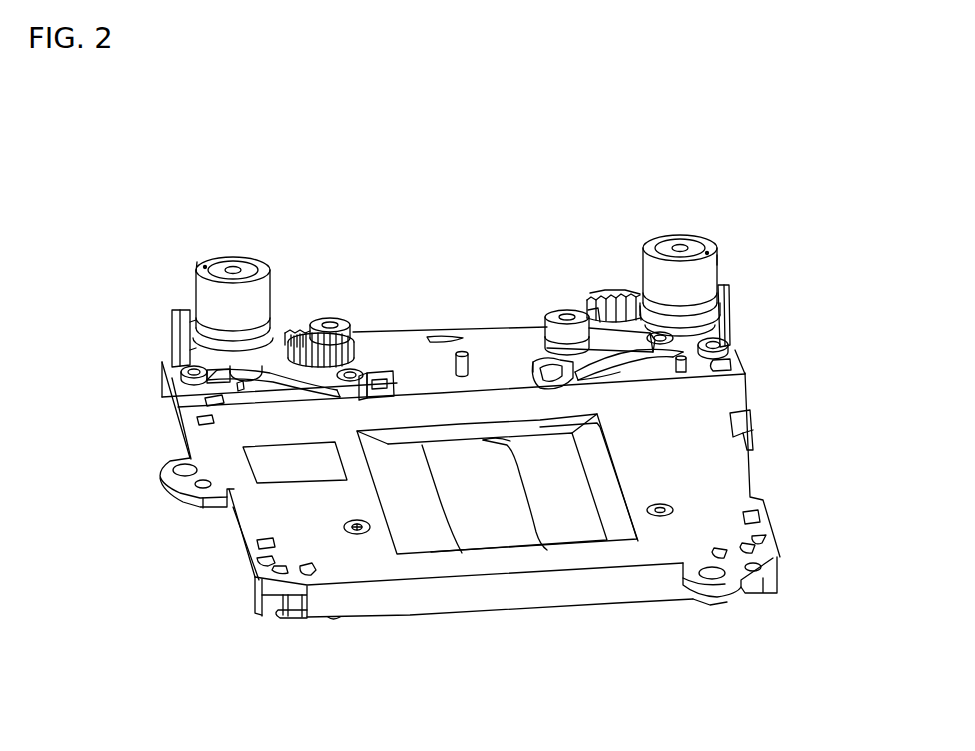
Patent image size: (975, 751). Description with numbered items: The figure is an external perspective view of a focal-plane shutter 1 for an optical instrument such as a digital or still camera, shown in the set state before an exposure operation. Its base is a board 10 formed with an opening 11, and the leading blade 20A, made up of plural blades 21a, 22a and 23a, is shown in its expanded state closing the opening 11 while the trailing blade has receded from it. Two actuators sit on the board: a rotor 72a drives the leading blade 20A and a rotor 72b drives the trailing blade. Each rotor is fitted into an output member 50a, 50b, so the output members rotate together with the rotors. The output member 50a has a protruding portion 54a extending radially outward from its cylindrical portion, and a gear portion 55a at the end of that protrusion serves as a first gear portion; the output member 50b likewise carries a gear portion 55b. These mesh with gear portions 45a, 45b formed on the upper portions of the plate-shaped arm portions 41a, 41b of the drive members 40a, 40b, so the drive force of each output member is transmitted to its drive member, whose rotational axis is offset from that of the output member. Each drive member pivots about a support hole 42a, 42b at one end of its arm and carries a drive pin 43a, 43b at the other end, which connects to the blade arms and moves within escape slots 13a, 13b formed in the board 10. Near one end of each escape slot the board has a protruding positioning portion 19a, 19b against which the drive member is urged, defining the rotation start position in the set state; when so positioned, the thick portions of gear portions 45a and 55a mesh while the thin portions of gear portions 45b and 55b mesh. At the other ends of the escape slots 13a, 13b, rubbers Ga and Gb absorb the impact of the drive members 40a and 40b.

The focal-plane shutter 1 is at (527, 190).
The board 10 is at (376, 620).
The opening 11 is at (410, 517).
The escape slot 13a is at (162, 397).
The escape slot 13b is at (598, 382).
The positioning portion 19a is at (420, 325).
The positioning portion 19b is at (723, 330).
The leading blade 20A is at (527, 582).
The blade 21a is at (583, 517).
The blade 22a is at (477, 517).
The blade 23a is at (437, 508).
The drive member 40a is at (347, 313).
The drive member 40b is at (557, 300).
The arm portion 41a is at (352, 372).
The arm portion 41b is at (730, 343).
The support hole 42a is at (328, 322).
The support hole 42b is at (570, 307).
The drive pin 43a is at (390, 391).
The drive pin 43b is at (730, 367).
The gear portion 45a is at (348, 366).
The gear portion 45b is at (602, 297).
The output member 50a is at (276, 318).
The output member 50b is at (633, 293).
The protruding portion 54a is at (190, 320).
The gear portion 55a is at (287, 333).
The gear portion 55b is at (628, 317).
The rotor 72a is at (197, 268).
The rotor 72b is at (718, 260).
The rubber Ga is at (162, 362).
The rubber Gb is at (553, 380).